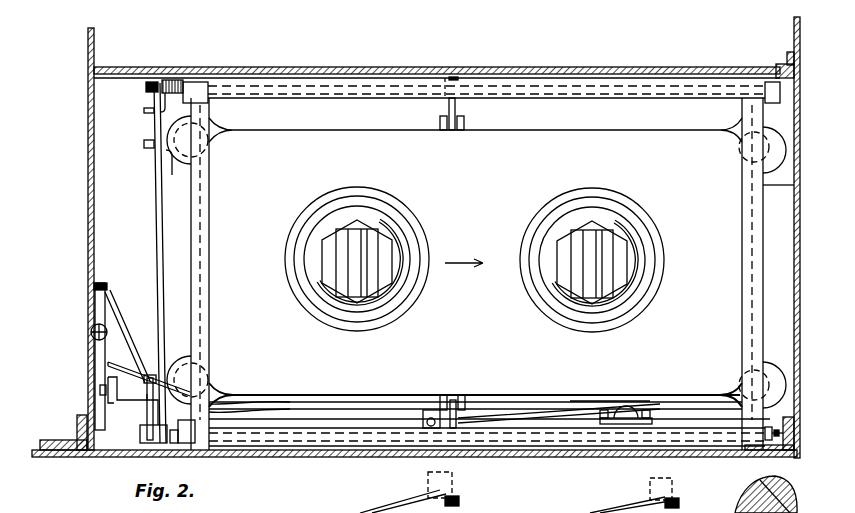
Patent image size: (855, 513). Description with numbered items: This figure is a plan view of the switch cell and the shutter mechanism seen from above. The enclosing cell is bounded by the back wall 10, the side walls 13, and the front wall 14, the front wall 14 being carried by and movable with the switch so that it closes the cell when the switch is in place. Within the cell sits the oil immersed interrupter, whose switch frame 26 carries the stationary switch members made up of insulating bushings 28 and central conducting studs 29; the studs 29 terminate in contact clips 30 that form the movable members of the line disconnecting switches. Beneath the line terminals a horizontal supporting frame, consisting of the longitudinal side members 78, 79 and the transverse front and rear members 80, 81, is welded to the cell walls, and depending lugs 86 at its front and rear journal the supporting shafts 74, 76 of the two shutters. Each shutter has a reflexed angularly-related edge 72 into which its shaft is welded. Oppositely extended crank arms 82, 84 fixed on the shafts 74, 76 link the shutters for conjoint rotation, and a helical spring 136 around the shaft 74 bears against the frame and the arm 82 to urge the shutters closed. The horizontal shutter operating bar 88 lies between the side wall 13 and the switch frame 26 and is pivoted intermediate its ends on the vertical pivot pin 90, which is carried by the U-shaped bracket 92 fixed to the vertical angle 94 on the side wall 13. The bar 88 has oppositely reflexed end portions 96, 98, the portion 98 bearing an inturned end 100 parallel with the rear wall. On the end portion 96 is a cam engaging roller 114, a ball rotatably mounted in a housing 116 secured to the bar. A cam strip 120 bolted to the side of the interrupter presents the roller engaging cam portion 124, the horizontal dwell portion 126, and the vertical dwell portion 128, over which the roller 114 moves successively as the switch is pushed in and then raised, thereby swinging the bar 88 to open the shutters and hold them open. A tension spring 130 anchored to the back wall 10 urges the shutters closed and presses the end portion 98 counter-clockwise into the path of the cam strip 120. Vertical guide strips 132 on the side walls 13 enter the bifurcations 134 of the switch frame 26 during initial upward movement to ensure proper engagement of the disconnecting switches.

The back wall 10 is at (88, 232).
The side walls 13 is at (327, 66).
The front wall 14 is at (801, 270).
The switch frame 26 is at (447, 416).
The insulating bushings 28 is at (296, 291).
The central conducting studs 29 is at (386, 247).
The contact clips 30 is at (352, 230).
The angularly-related edge 72 is at (784, 480).
The supporting shaft 74 is at (146, 88).
The supporting shaft 76 is at (795, 439).
The horizontal longitudinal side member 78 is at (542, 97).
The horizontal longitudinal side member 79 is at (521, 427).
The transverse horizontal front member 80 is at (211, 290).
The transverse horizontal rear member 81 is at (742, 320).
The crank arm 82 is at (152, 137).
The crank arm 84 is at (168, 447).
The depending lugs 86 is at (207, 100).
The shutter operating bar 88 is at (327, 408).
The vertical pivot pin 90 is at (429, 417).
The U-shaped bracket 92 is at (452, 399).
The vertical angle 94 is at (472, 414).
The reflexed end portion 96 is at (548, 418).
The reflexed end portion 98 is at (186, 407).
The inturned end 100 is at (108, 398).
The cam engaging roller 114 is at (622, 408).
The housing 116 is at (640, 412).
The cam strip 120 is at (373, 394).
The roller engaging cam portion 124 is at (112, 367).
The horizontal dwell portion 126 is at (356, 450).
The vertical dwell portion 128 is at (567, 452).
The tension spring 130 is at (93, 327).
The vertical guide strips 132 is at (447, 108).
The bifurcations 134 is at (460, 133).
The helical spring 136 is at (176, 80).